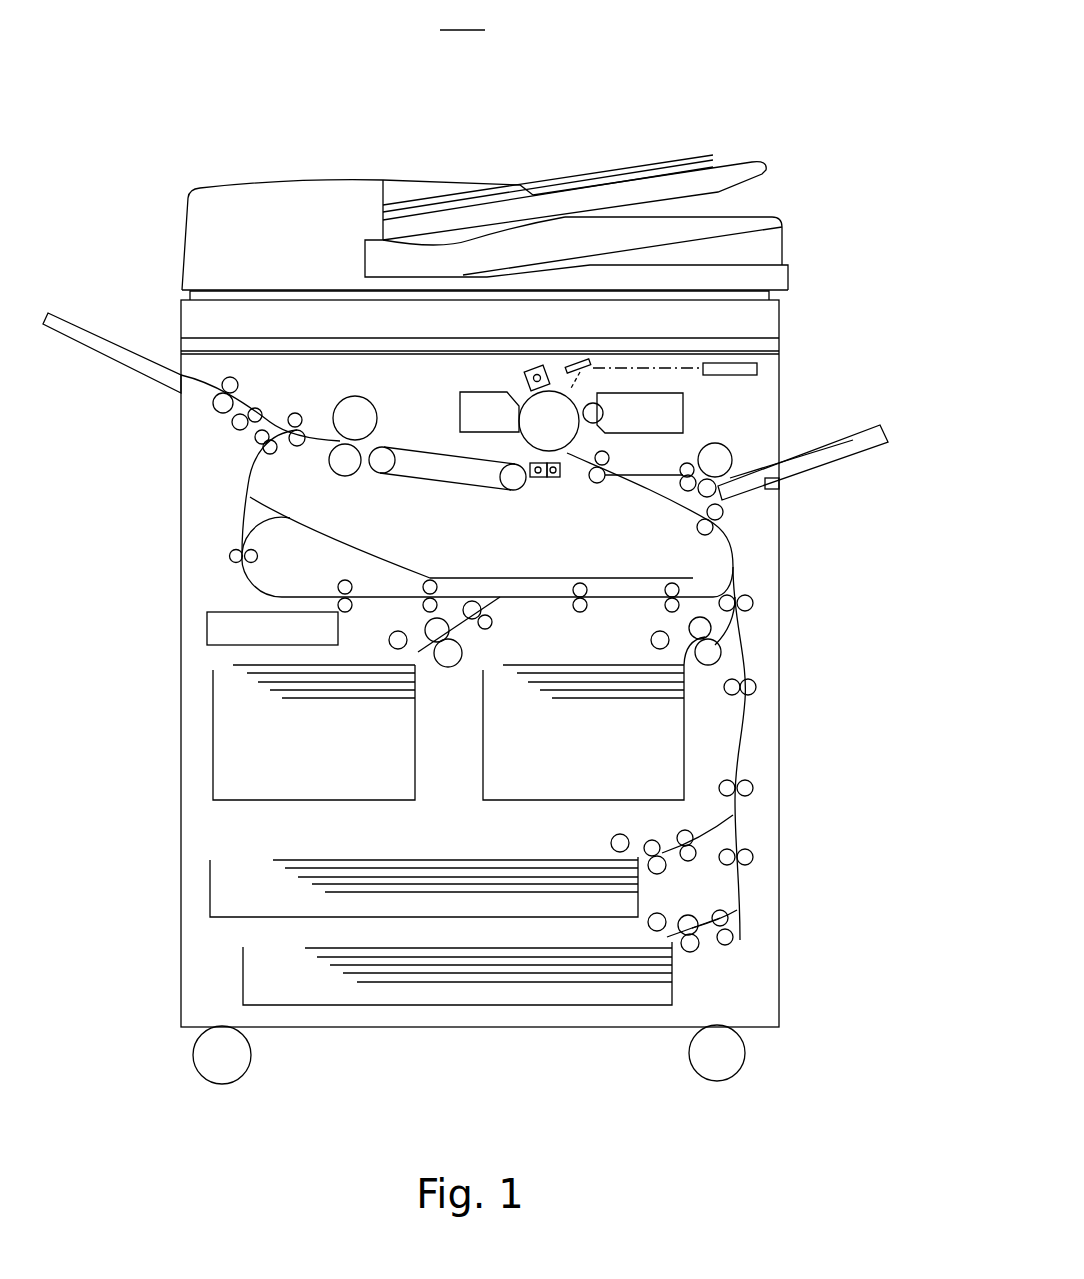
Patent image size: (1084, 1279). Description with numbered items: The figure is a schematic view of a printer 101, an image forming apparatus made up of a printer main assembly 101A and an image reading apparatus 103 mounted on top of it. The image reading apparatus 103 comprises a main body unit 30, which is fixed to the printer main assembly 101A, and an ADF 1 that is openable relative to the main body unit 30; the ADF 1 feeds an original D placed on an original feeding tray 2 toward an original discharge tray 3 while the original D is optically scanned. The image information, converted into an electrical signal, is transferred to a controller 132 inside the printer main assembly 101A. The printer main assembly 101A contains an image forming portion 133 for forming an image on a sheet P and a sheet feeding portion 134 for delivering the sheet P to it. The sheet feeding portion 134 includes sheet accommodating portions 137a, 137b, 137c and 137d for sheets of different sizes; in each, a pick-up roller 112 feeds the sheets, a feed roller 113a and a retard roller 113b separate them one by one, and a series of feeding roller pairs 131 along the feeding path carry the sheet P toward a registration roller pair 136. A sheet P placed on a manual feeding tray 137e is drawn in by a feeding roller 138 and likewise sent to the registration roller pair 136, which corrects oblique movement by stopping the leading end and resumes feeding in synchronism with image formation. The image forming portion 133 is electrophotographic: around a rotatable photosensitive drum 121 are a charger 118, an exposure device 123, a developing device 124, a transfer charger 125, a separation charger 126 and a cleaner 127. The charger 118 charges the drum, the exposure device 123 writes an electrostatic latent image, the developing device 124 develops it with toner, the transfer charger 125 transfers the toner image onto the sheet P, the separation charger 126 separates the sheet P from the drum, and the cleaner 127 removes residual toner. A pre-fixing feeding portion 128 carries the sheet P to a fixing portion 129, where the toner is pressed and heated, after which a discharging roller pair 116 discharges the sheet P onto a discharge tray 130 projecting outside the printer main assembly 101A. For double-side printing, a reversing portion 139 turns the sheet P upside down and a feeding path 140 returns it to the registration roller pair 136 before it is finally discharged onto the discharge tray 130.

The printer 101 is at (437, 75).
The printer main assembly 101A is at (790, 381).
The image reading apparatus 103 is at (900, 217).
The ADF 1 is at (793, 239).
The main body unit 30 is at (790, 313).
The original feeding tray 2 is at (750, 162).
The original discharge tray 3 is at (762, 212).
The original D is at (668, 160).
The charger 118 is at (543, 370).
The photosensitive drum 121 is at (538, 395).
The exposure device 123 is at (757, 369).
The developing device 124 is at (668, 412).
The transfer charger 125 is at (562, 480).
The separation charger 126 is at (537, 481).
The cleaner 127 is at (460, 410).
The pre-fixing feeding portion 128 is at (448, 453).
The fixing portion 129 is at (345, 408).
The discharge tray 130 is at (70, 342).
The feeding roller pair 131 is at (490, 607).
The controller 132 is at (207, 628).
The image forming portion 133 is at (513, 453).
The sheet feeding portion 134 is at (738, 584).
The registration roller pair 136 is at (607, 472).
The sheet accommodating portion 137a is at (243, 975).
The sheet accommodating portion 137b is at (210, 887).
The sheet accommodating portion 137c is at (213, 742).
The sheet accommodating portion 137d is at (684, 737).
The manual feeding tray 137e is at (862, 460).
The feeding roller 138 is at (722, 450).
The reversing portion 139 is at (338, 527).
The feeding path 140 is at (237, 574).
The discharging roller pair 116 is at (227, 417).
The pick-up roller 112 is at (389, 640).
The feed roller 113a is at (431, 622).
The retard roller 113b is at (452, 665).
The sheet P is at (552, 665).